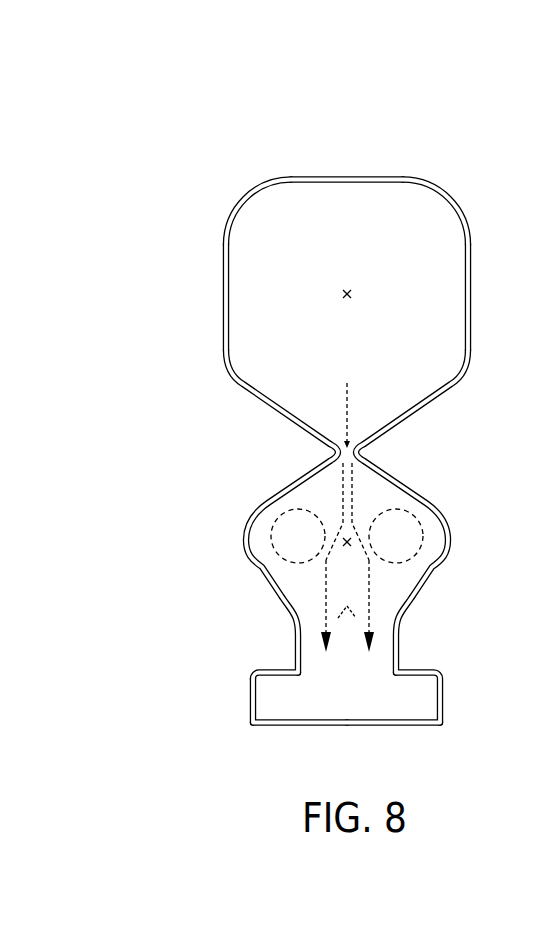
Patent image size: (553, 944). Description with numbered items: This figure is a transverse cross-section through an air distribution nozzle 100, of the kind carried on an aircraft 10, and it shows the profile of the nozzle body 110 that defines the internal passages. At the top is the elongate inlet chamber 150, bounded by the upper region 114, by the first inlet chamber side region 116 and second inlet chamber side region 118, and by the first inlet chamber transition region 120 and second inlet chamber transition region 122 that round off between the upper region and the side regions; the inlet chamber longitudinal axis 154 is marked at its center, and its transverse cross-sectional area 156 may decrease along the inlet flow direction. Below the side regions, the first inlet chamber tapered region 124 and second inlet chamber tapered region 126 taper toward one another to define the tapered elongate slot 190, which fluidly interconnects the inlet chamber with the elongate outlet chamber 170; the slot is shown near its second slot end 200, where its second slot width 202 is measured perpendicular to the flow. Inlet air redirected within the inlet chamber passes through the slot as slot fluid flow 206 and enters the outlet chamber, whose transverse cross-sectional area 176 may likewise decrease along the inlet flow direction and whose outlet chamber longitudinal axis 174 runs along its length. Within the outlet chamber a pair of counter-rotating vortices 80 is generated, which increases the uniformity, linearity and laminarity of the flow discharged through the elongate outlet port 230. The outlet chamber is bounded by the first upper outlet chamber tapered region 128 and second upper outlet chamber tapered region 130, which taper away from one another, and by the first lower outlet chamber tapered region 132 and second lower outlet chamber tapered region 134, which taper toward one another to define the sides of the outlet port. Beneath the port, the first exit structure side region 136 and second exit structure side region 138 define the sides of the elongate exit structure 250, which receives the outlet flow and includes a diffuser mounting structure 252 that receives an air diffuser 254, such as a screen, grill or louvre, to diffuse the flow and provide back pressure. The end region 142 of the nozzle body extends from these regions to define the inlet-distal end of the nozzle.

The aircraft 10 is at (118, 88).
The air distribution nozzle 100 is at (160, 123).
The nozzle body 110 is at (213, 275).
The upper region 114 is at (346, 177).
The first inlet chamber side region 116 is at (223, 298).
The second inlet chamber side region 118 is at (472, 295).
The first inlet chamber transition region 120 is at (245, 202).
The second inlet chamber transition region 122 is at (448, 200).
The first inlet chamber tapered region 124 is at (250, 403).
The second inlet chamber tapered region 126 is at (420, 413).
The first upper outlet chamber tapered region 128 is at (282, 488).
The second upper outlet chamber tapered region 130 is at (428, 494).
The first lower outlet chamber tapered region 132 is at (283, 603).
The second lower outlet chamber tapered region 134 is at (407, 602).
The first exit structure side region 136 is at (250, 700).
The second exit structure side region 138 is at (443, 702).
The end region 142 is at (273, 548).
The elongate inlet chamber 150 is at (361, 250).
The inlet chamber longitudinal axis 154 is at (353, 294).
The transverse cross-sectional area of elongate inlet chamber 156 is at (253, 336).
The elongate outlet chamber 170 is at (363, 575).
The outlet chamber longitudinal axis 174 is at (340, 497).
The transverse cross-sectional area of elongate outlet chamber 176 is at (265, 525).
The tapered elongate slot 190 is at (338, 415).
The second slot end 200 is at (340, 452).
The second slot width 202 is at (355, 452).
The slot fluid flow 206 is at (350, 405).
The elongate outlet port 230 is at (324, 663).
The elongate exit structure 250 is at (252, 680).
The diffuser mounting structure 252 is at (240, 715).
The air diffuser 254 is at (367, 712).
The counter-rotating vortices 80 is at (347, 578).